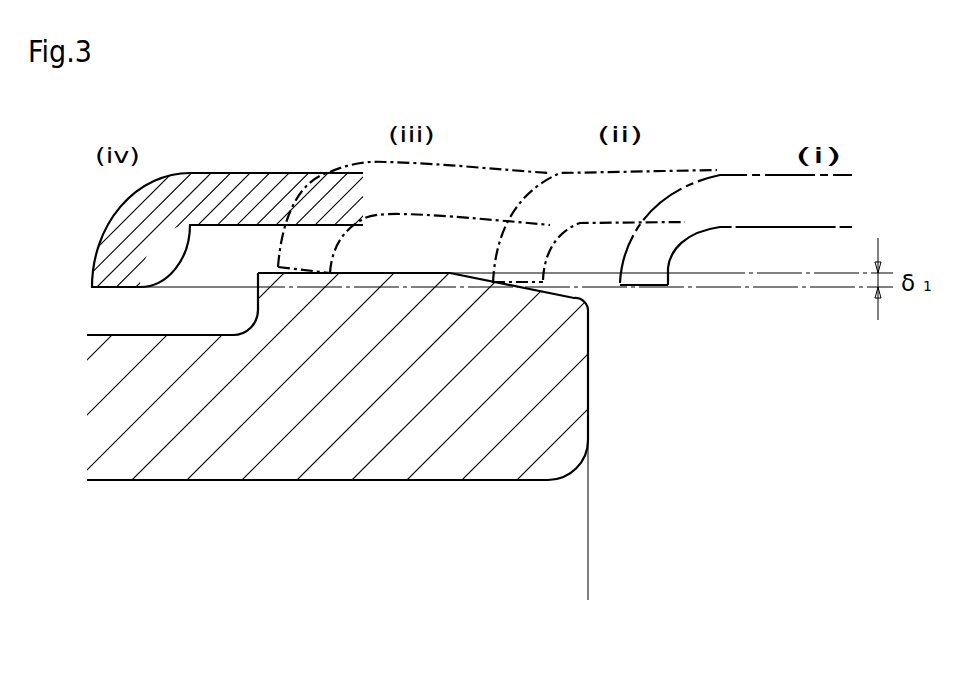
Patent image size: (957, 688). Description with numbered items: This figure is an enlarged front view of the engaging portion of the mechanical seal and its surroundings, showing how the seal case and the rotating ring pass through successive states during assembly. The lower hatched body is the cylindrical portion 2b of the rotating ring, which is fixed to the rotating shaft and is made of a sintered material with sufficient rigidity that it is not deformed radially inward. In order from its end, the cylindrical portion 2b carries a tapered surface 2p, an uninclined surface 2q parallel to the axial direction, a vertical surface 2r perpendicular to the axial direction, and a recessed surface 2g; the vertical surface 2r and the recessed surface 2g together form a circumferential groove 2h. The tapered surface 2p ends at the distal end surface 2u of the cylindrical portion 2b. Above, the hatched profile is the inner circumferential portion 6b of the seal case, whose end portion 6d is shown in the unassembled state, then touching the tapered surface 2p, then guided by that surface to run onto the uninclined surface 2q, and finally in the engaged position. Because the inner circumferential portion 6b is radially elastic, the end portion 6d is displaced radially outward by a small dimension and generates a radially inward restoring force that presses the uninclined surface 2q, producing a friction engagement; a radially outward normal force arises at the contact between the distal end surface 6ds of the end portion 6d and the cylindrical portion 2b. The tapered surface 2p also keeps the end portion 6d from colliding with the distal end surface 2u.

The end portion 6d is at (145, 217).
The inner circumferential portion 6b is at (260, 193).
The distal end surface 6ds is at (112, 288).
The uninclined surface 2q is at (408, 273).
The tapered surface 2p is at (557, 284).
The distal end surface 2u is at (589, 385).
The recessed surface 2g is at (140, 335).
The circumferential groove 2h is at (177, 312).
The vertical surface 2r is at (255, 292).
The cylindrical portion 2b is at (333, 460).